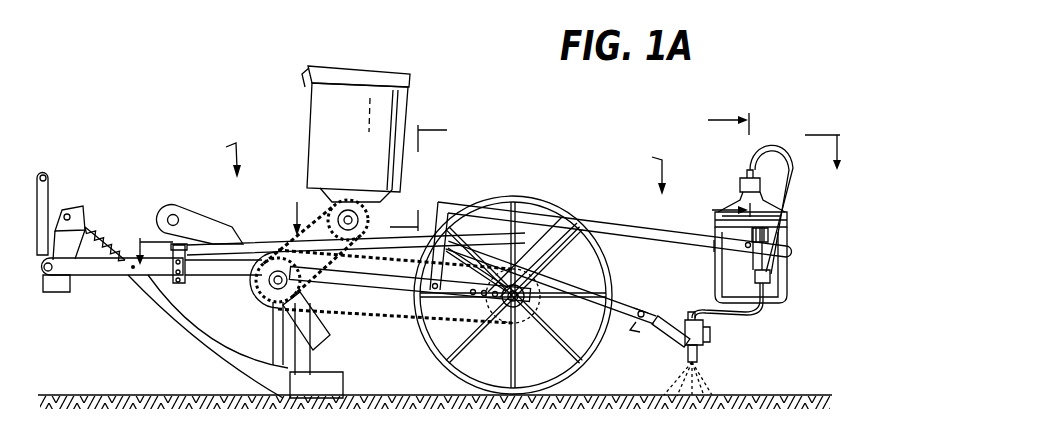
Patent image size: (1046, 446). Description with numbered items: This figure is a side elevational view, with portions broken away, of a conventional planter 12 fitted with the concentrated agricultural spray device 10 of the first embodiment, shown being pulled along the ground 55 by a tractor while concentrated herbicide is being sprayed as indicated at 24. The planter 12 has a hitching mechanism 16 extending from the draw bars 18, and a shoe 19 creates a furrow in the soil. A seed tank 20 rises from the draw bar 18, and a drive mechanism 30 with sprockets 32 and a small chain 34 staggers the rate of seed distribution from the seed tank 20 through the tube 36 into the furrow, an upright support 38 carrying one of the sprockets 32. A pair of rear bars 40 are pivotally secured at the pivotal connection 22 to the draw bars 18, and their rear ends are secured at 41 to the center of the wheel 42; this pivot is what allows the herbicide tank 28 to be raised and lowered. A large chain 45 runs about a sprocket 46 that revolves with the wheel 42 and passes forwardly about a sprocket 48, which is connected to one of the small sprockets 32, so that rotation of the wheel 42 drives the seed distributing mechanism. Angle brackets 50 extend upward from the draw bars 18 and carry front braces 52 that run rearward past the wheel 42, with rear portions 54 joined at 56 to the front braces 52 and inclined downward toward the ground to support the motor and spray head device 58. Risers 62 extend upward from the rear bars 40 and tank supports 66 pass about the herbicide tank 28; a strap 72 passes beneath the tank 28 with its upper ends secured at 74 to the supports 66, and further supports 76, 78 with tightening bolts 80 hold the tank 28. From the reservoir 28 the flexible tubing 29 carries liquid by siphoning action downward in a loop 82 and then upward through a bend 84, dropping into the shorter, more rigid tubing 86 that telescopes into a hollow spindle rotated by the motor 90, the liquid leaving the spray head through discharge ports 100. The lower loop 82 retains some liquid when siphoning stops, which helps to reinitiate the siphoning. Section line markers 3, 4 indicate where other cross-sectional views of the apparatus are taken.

The section line 3 is at (486, 188).
The section line 4 is at (717, 163).
The concentrated agricultural spray device 10 is at (645, 170).
The planter 12 is at (220, 157).
The hitching mechanism 16 is at (48, 183).
The draw bars 18 is at (87, 270).
The shoe 19 is at (158, 334).
The seed tank 20 is at (313, 105).
The pivotal connection 22 is at (324, 285).
The sprayed concentrated herbicide 24 is at (715, 388).
The herbicide tank 28 is at (790, 262).
The hose 29 is at (795, 172).
The drive mechanism 30 is at (313, 216).
The sprockets 32 is at (362, 168).
The small chain 34 is at (300, 246).
The tube 36 is at (307, 345).
The upright support 38 is at (277, 337).
The rear bars 40 is at (380, 282).
The wheel securing point 41 is at (533, 300).
The wheel 42 is at (590, 245).
The large chain 45 is at (376, 320).
The sprocket 46 is at (517, 320).
The sprocket 48 is at (262, 303).
The angle brackets 50 is at (174, 284).
The front braces 52 is at (248, 240).
The rear portions 54 is at (648, 310).
The ground surface 55 is at (793, 396).
The connection 56 is at (525, 230).
The motor and spray head device 58 is at (712, 338).
The risers 62 is at (438, 218).
The tank supports 66 is at (652, 235).
The strap 72 is at (743, 258).
The strap securing point 74 is at (717, 247).
The support 76 is at (772, 280).
The support 78 is at (762, 223).
The tightening bolts 80 is at (790, 235).
The loop 82 is at (748, 316).
The bend 84 is at (690, 308).
The short length of tubing 86 is at (704, 322).
The motor 90 is at (682, 347).
The discharge ports 100 is at (700, 355).